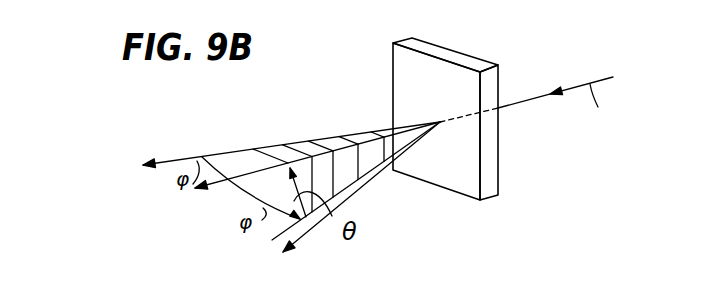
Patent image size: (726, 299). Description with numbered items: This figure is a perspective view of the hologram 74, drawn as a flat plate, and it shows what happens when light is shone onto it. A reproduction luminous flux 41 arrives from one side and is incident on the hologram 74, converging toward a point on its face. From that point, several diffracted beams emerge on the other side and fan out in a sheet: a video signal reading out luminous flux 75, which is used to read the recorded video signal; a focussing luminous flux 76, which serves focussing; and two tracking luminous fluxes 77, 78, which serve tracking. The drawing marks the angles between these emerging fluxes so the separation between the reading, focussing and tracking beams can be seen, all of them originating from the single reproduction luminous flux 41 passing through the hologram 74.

The hologram 74 is at (447, 77).
The reproduction luminous flux 41 is at (528, 99).
The tracking luminous flux 78 is at (192, 158).
The video signal reading out luminous flux 75 is at (212, 184).
The tracking luminous flux 77 is at (272, 239).
The focussing luminous flux 76 is at (303, 236).